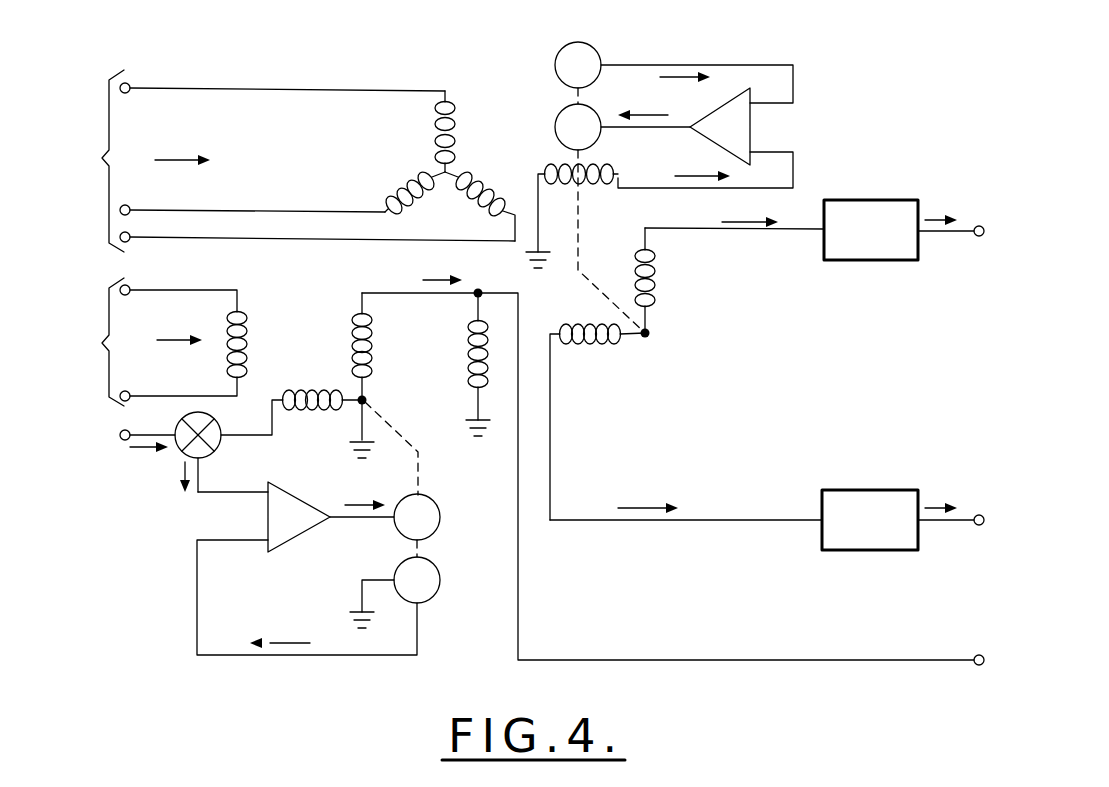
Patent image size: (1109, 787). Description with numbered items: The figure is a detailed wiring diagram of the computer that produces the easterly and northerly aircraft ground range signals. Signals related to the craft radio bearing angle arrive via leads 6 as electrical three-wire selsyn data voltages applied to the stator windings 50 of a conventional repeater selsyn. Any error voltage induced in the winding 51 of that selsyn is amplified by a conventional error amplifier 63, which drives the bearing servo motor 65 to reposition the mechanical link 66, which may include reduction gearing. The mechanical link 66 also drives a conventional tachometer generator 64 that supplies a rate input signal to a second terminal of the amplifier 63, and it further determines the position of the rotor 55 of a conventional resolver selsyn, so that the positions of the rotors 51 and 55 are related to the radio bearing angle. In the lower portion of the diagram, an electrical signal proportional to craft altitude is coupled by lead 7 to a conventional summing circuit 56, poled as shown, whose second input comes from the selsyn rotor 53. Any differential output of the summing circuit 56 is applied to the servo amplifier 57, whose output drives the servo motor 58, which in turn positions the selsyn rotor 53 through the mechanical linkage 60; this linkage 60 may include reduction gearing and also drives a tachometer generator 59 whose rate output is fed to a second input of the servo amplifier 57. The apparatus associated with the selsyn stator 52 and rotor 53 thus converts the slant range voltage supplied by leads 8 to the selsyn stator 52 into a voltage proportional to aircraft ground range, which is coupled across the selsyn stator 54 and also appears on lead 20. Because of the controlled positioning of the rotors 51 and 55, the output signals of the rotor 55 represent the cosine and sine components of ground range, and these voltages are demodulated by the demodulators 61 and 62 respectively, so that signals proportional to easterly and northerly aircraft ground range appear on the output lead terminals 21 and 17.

The leads 6 is at (291, 161).
The lead 7 is at (121, 435).
The leads 8 is at (135, 342).
The output lead terminal 17 is at (964, 519).
The lead 20 is at (845, 660).
The output lead terminal 21 is at (964, 230).
The stator windings 50 is at (428, 165).
The winding 51 is at (622, 168).
The selsyn stator 52 is at (248, 316).
The selsyn rotor 53 is at (368, 396).
The selsyn stator 54 is at (468, 356).
The rotor 55 is at (652, 332).
The summing circuit 56 is at (180, 452).
The servo amplifier 57 is at (290, 490).
The servo motor 58 is at (440, 508).
The tachometer generator 59 is at (440, 578).
The mechanical linkage 60 is at (400, 436).
The demodulator 61 is at (865, 200).
The demodulator 62 is at (864, 490).
The error amplifier 63 is at (755, 130).
The tachometer generator 64 is at (556, 56).
The bearing servo motor 65 is at (556, 115).
The mechanical link 66 is at (582, 246).